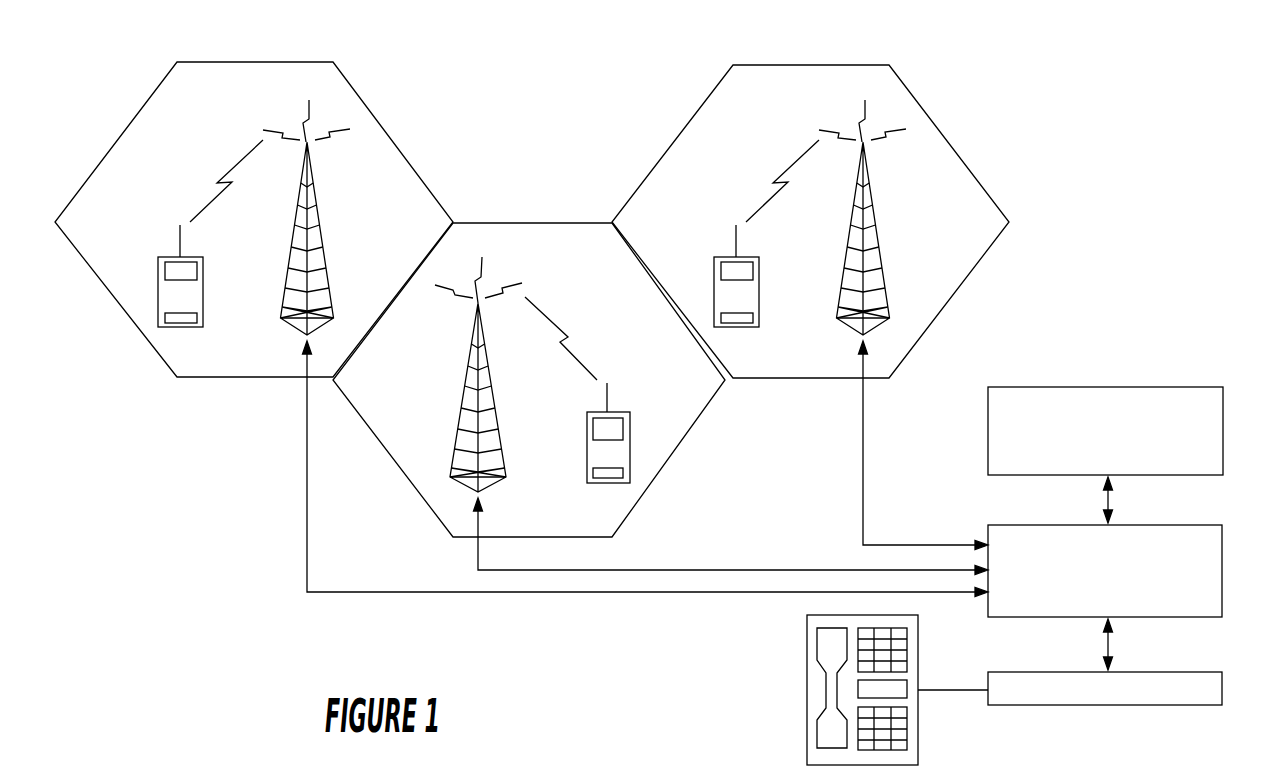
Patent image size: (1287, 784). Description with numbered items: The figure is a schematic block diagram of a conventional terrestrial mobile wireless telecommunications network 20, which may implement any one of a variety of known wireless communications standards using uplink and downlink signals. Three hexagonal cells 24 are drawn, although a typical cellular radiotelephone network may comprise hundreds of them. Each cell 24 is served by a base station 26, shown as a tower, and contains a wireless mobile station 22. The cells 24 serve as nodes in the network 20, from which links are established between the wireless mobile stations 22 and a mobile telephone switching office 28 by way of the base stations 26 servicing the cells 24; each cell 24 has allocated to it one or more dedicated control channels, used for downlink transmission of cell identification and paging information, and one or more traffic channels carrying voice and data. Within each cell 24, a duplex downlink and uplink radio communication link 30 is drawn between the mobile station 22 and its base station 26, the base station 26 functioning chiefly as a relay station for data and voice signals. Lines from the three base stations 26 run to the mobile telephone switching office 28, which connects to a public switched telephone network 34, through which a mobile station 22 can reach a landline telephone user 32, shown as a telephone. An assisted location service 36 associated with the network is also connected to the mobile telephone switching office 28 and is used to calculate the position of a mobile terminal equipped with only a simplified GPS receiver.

The terrestrial mobile telecommunications network 20 is at (1010, 158).
The wireless mobile station 22 is at (203, 293).
The cell 24 is at (360, 98).
The base station 26 is at (330, 200).
The mobile telephone switching office 28 is at (1222, 580).
The radio communication link 30 is at (214, 156).
The landline telephone user 32 is at (918, 672).
The public switched telephone network 34 is at (1222, 692).
The assisted location service 36 is at (1223, 440).